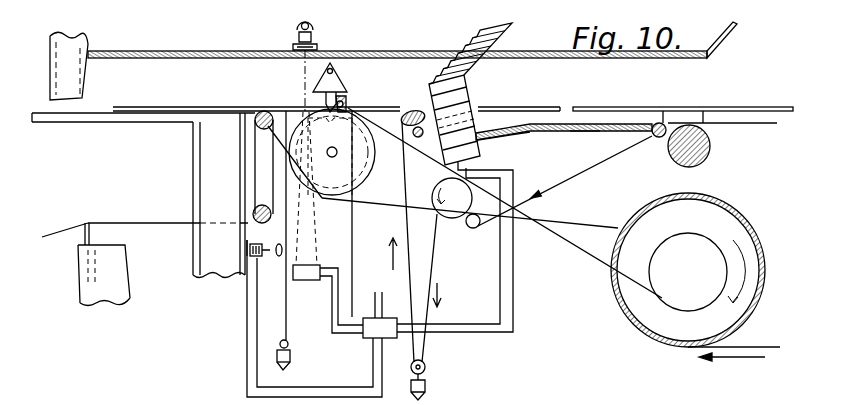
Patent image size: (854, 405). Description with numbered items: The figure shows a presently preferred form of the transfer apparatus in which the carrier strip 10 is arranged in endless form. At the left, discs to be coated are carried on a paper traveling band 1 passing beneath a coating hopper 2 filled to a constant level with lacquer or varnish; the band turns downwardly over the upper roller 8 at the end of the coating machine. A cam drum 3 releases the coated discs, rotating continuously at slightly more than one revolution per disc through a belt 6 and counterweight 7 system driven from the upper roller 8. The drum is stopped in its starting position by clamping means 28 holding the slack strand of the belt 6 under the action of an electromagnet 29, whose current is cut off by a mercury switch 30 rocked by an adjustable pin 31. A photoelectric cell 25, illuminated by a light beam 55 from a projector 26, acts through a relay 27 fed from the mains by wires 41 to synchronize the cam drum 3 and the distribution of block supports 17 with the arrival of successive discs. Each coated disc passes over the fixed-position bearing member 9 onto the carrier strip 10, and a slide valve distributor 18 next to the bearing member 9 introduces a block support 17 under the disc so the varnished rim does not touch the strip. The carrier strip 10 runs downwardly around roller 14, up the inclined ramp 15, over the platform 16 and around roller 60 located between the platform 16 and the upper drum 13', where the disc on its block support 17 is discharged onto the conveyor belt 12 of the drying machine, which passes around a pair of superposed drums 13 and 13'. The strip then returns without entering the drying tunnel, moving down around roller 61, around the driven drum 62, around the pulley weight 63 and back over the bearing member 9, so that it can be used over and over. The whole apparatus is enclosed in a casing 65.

The traveling band 1 is at (100, 113).
The coating hopper 2 is at (88, 45).
The cam drum 3 is at (366, 179).
The belt 6 is at (284, 310).
The counterweight 7 is at (287, 366).
The upper roller 8 is at (261, 129).
The bearing member 9 is at (410, 109).
The carrier strip 10 is at (578, 183).
The conveyor belt 12 is at (757, 124).
The drum 13 is at (695, 277).
The upper drum 13' is at (707, 152).
The roller 14 is at (417, 138).
The inclined ramp 15 is at (490, 132).
The platform 16 is at (578, 131).
The block supports 17 is at (470, 114).
The slide valve distributor 18 is at (480, 149).
The photoelectric cell 25 is at (308, 281).
The projector 26 is at (313, 27).
The relay 27 is at (368, 333).
The clamping means 28 is at (278, 258).
The electromagnet 29 is at (258, 262).
The mercury switch 30 is at (340, 86).
The pin 31 is at (322, 107).
The wires 41 is at (374, 299).
The light beam 55 is at (300, 73).
The roller 60 is at (652, 133).
The roller 61 is at (475, 229).
The driven drum 62 is at (452, 217).
The pulley weight 63 is at (424, 390).
The casing 65 is at (196, 58).